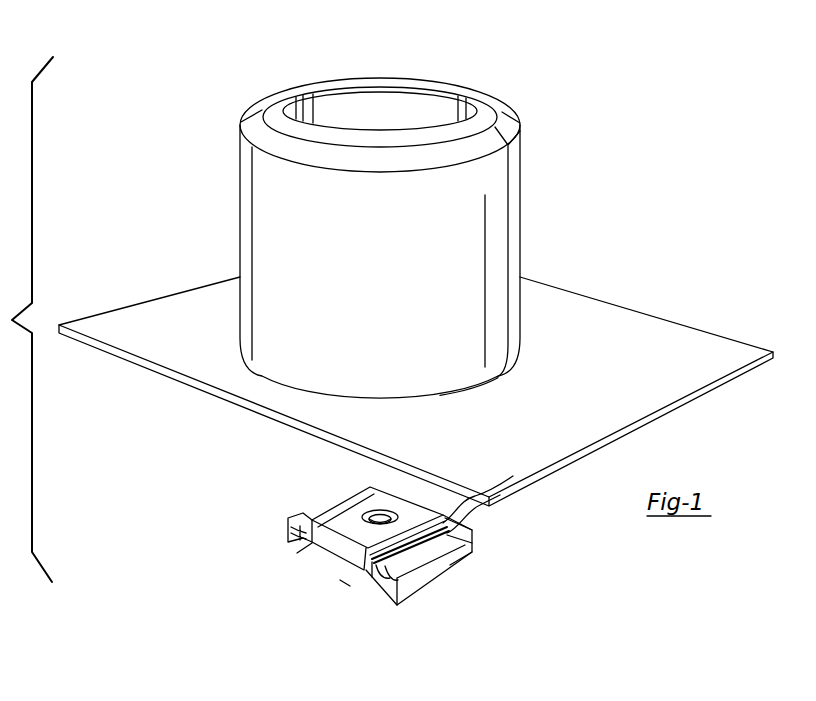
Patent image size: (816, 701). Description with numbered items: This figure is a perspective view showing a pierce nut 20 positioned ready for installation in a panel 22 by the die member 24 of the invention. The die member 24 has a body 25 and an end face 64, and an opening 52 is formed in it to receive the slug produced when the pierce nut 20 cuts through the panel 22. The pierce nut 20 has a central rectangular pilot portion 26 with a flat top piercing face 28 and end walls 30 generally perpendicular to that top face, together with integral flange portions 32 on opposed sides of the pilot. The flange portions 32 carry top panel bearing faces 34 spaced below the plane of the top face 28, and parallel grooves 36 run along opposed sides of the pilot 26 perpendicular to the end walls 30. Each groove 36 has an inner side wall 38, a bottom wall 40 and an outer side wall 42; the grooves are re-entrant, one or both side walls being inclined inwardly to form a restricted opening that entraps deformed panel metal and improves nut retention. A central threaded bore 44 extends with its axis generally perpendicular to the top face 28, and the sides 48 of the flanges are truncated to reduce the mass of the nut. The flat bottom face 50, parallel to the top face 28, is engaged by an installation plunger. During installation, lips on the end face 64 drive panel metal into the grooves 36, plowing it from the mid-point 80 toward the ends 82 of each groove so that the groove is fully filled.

The pierce nut 20 is at (268, 518).
The panel 22 is at (610, 383).
The die member 24 is at (499, 197).
The body 25 is at (238, 237).
The pilot portion 26 is at (411, 499).
The top piercing face 28 is at (358, 516).
The end walls 30 is at (297, 553).
The flange portions 32 is at (448, 577).
The panel bearing faces 34 is at (472, 510).
The grooves 36 is at (417, 548).
The inner side wall 38 is at (438, 535).
The bottom wall 40 is at (290, 545).
The outer side wall 42 is at (307, 518).
The threaded bore 44 is at (380, 518).
The sides of the flanges 48 is at (458, 562).
The bottom face 50 is at (345, 587).
The opening 52 is at (373, 102).
The end face 64 is at (463, 390).
The mid-point 80 is at (410, 550).
The ends 82 is at (513, 483).